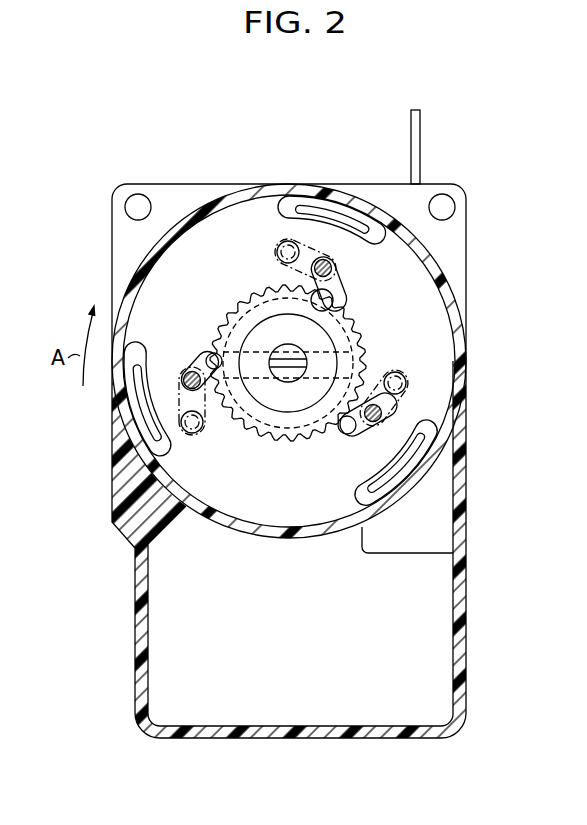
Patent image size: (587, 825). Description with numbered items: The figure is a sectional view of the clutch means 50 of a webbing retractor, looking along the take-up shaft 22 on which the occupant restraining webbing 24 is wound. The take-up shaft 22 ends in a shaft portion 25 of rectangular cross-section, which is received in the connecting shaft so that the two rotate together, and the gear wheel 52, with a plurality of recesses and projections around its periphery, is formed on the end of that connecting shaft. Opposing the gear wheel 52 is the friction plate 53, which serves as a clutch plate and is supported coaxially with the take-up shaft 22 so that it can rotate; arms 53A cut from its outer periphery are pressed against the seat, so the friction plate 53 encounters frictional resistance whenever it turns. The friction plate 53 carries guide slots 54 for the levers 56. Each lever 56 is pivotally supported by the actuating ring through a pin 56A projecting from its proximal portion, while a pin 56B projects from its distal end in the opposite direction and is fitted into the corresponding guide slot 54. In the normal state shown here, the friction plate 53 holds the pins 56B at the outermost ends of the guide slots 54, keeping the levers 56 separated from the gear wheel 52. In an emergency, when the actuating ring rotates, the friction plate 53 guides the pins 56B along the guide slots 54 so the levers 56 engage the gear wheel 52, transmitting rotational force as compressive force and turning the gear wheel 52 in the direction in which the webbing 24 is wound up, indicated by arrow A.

The clutch means 50 is at (252, 215).
The friction plate 53 is at (157, 290).
The arms 53A is at (327, 200).
The occupant restraining webbing 24 is at (421, 138).
The gear wheel 52 is at (366, 350).
The shaft portion 25 is at (258, 352).
The take-up shaft 22 is at (222, 328).
The guide slots 54 is at (325, 305).
The levers 56 is at (278, 249).
The pins 56A is at (281, 255).
The pin 56B is at (350, 283).